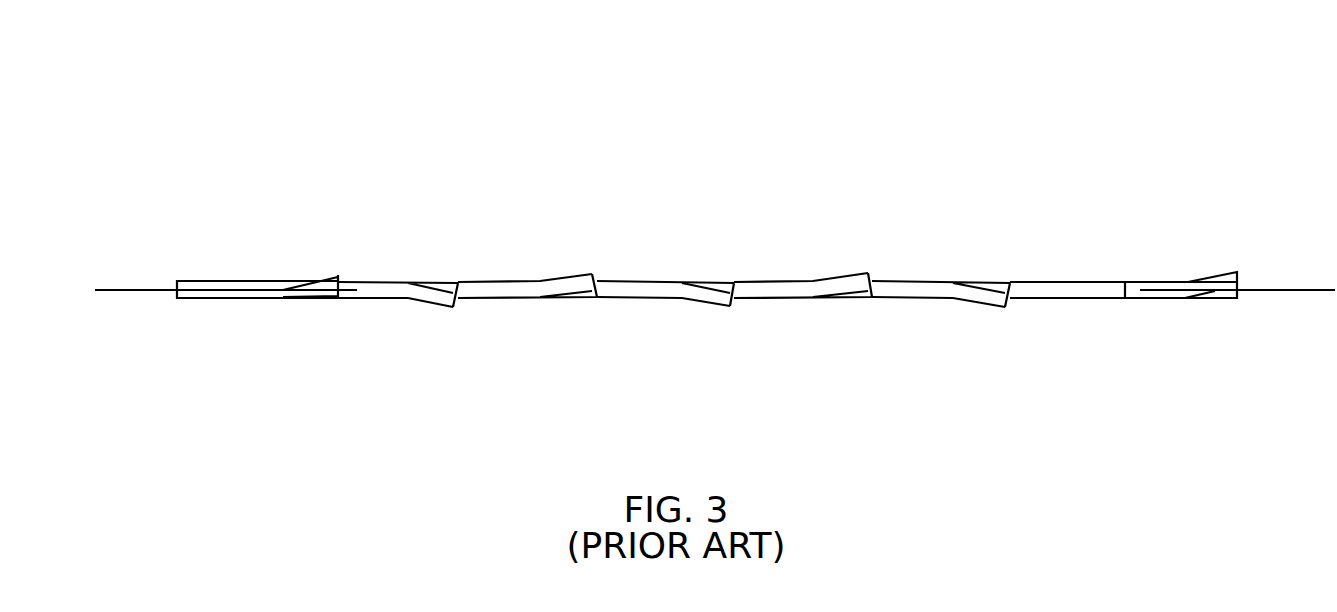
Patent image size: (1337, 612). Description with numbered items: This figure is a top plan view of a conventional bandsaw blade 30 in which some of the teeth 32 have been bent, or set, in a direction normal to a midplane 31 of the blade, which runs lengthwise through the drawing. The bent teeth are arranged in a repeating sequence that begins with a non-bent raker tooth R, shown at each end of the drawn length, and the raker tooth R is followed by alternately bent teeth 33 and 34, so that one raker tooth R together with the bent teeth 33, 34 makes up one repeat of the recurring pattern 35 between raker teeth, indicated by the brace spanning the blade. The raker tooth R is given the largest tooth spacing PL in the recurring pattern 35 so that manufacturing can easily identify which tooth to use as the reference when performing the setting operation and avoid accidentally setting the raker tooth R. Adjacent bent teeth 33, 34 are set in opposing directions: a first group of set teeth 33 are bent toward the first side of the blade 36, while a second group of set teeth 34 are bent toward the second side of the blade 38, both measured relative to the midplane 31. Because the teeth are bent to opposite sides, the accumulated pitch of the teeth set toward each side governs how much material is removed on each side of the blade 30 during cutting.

The bandsaw blade 30 is at (1137, 415).
The midplane 31 is at (132, 290).
The teeth 32 is at (453, 338).
The first group of set teeth 33 is at (433, 306).
The second group of set teeth 34 is at (338, 281).
The recurring pattern 35 is at (217, 163).
The first side of the blade 36 is at (632, 312).
The second side of the blade 38 is at (632, 265).
The raker tooth R is at (218, 298).
The tooth spacing PL is at (329, 240).